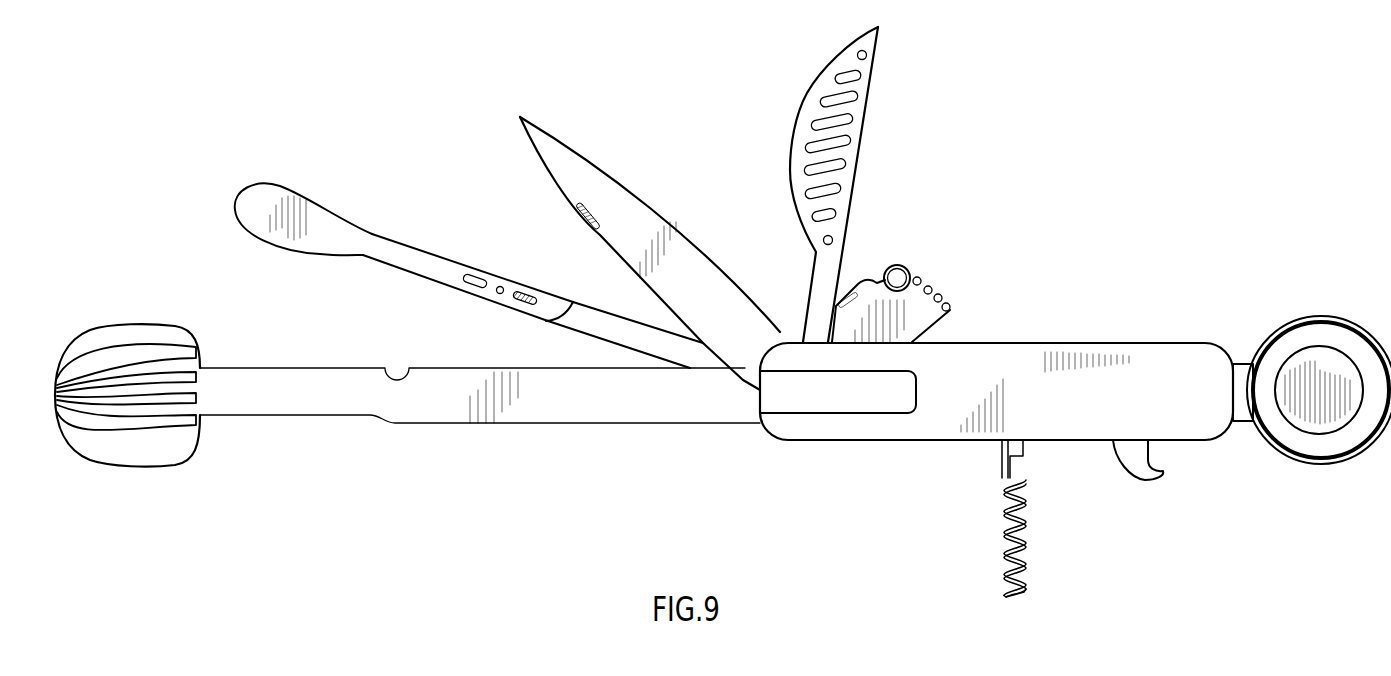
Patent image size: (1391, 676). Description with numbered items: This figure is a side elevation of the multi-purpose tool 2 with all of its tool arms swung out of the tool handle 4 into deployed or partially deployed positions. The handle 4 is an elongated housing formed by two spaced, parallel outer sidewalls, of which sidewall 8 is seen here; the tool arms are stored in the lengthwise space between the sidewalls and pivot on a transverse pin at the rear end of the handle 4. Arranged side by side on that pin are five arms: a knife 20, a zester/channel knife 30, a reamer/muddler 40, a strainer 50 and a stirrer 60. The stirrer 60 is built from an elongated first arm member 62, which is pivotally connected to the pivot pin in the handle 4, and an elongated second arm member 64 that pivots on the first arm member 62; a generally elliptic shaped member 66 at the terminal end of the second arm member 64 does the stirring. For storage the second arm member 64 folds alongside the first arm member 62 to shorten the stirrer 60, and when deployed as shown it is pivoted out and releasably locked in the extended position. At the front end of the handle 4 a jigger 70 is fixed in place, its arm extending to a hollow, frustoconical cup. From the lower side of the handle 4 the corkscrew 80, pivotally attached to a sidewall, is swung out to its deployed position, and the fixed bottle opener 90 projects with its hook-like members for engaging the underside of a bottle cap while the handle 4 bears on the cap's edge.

The multi-purpose tool 2 is at (1036, 152).
The tool handle 4 is at (1088, 348).
The second outer sidewall 8 is at (921, 430).
The knife 20 is at (595, 178).
The zester/channel knife 30 is at (918, 312).
The reamer/muddler 40 is at (357, 391).
The strainer 50 is at (792, 147).
The stirrer 60 is at (404, 238).
The first arm member 62 is at (645, 347).
The second arm member 64 is at (430, 258).
The elliptic shaped member 66 is at (258, 198).
The jigger 70 is at (1328, 362).
The corkscrew 80 is at (1003, 553).
The bottle opener 90 is at (1128, 462).